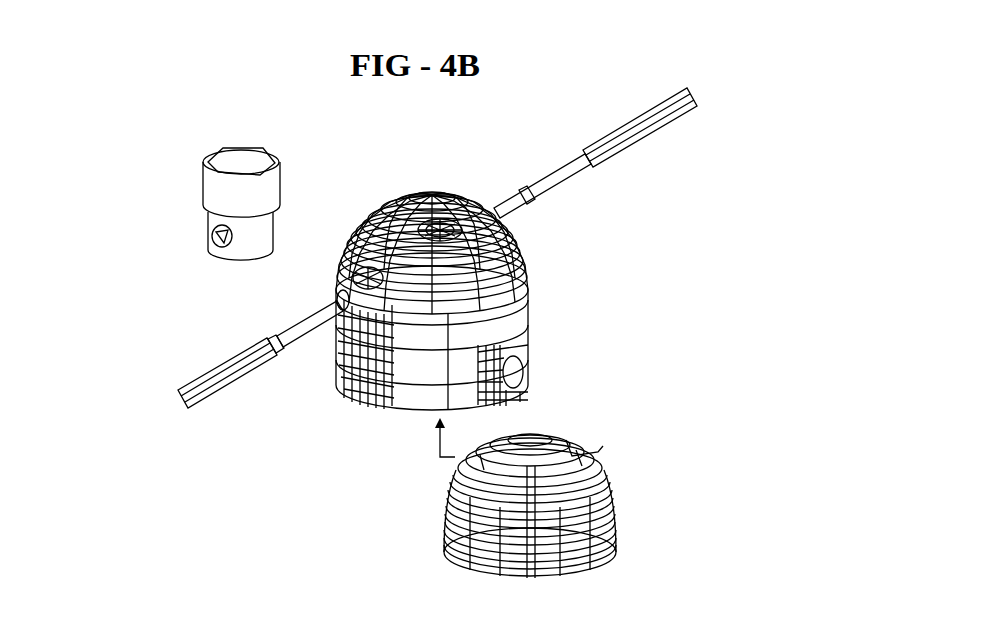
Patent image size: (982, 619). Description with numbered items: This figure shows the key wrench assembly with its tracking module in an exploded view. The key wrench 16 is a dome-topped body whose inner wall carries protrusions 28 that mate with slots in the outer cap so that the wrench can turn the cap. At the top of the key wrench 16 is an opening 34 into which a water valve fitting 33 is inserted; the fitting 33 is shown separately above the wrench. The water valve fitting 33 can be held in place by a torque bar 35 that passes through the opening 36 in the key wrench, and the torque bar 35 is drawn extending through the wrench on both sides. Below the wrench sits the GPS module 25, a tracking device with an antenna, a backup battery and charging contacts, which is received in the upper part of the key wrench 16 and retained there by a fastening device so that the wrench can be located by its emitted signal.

The key wrench 16 is at (685, 337).
The GPS module 25 is at (615, 396).
The protrusions 28 is at (418, 372).
The water valve fitting 33 is at (366, 216).
The opening 34 is at (447, 207).
The torque bar 35 is at (650, 155).
The opening 36 is at (328, 297).